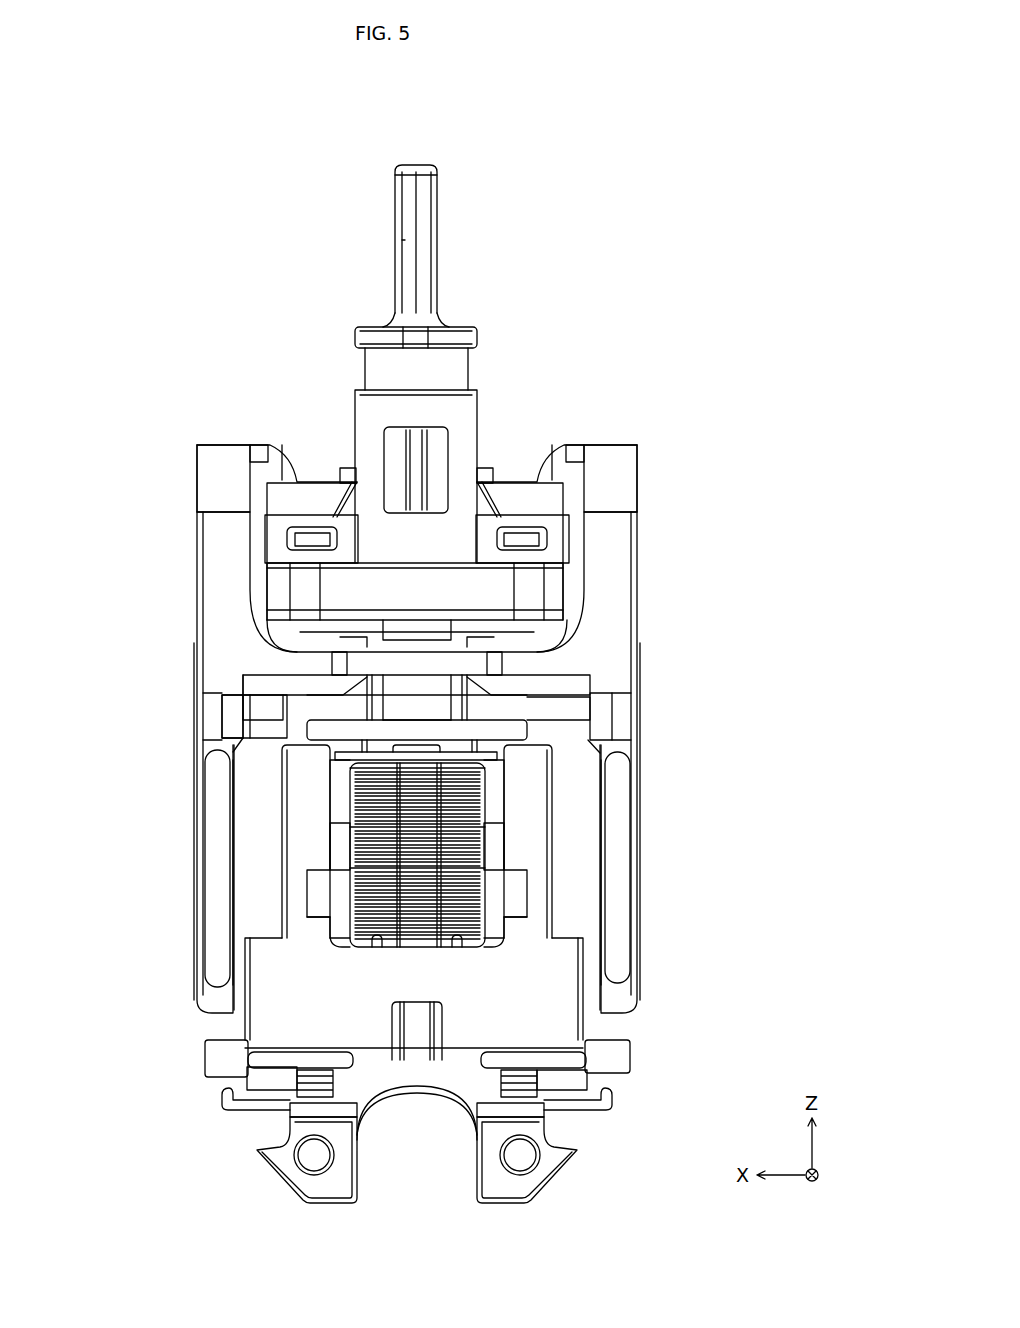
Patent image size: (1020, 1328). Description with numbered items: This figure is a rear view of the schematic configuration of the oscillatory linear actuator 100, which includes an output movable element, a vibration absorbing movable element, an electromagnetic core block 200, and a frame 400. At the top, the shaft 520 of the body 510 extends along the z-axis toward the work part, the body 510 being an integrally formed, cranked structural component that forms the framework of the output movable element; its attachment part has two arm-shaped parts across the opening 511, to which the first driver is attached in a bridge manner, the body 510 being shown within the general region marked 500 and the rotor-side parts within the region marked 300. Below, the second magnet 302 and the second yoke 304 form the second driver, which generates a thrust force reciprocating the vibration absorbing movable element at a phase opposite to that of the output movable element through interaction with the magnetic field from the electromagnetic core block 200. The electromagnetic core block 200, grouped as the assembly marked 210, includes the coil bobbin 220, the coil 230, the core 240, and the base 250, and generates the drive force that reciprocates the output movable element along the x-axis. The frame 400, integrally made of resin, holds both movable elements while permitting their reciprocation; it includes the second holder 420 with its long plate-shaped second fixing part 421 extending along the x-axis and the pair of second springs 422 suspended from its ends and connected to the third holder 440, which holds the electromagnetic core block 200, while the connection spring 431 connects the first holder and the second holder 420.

The oscillatory linear actuator 100 is at (225, 118).
The electromagnetic core block 200 is at (623, 1175).
The stator 210 is at (118, 862).
The coil bobbin 220 is at (335, 760).
The coil 230 is at (390, 790).
The core 240 is at (305, 837).
The base 250 is at (600, 1060).
The rotor unit 300 is at (270, 320).
The second magnet 302 is at (310, 728).
The second yoke 304 is at (320, 705).
The frame 400 is at (712, 565).
The second holder 420 is at (662, 845).
The second fixing part 421 is at (602, 707).
The second springs 422 is at (632, 786).
The connection spring 431 is at (225, 455).
The third holder 440 is at (265, 980).
The connector 500 is at (507, 374).
The body 510 is at (345, 583).
The opening 511 is at (353, 630).
The shaft 520 is at (415, 212).